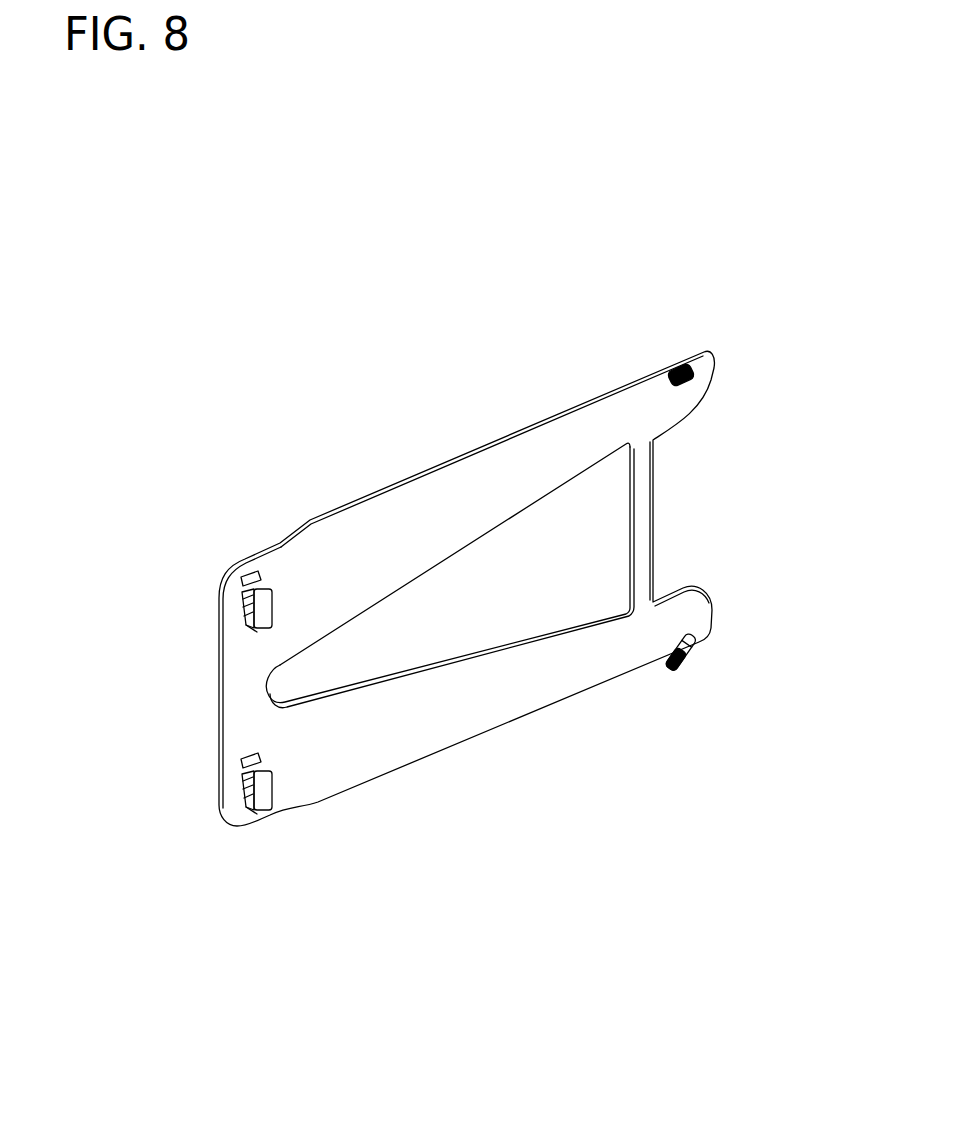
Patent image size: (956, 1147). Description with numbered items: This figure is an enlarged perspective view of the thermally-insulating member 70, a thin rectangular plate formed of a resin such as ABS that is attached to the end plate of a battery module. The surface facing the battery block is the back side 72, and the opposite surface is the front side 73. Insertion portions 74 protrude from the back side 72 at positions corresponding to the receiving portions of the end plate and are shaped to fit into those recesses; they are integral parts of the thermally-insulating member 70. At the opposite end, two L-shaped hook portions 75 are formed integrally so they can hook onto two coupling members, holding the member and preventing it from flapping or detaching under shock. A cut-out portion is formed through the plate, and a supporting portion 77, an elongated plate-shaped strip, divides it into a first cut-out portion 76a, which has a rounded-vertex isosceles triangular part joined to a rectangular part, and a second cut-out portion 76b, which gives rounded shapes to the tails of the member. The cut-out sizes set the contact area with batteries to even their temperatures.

The thermally-insulating member 70 is at (343, 470).
The back side 72 is at (508, 466).
The front side 73 is at (458, 488).
The insertion portions 74 is at (253, 628).
The hook portions 75 is at (690, 372).
The first cut-out portion 76a is at (477, 607).
The second cut-out portion 76b is at (670, 540).
The supporting portion 77 is at (643, 515).